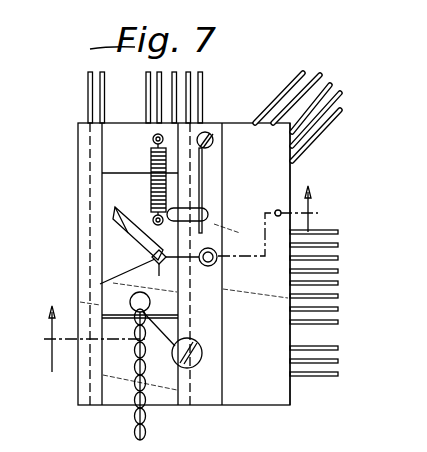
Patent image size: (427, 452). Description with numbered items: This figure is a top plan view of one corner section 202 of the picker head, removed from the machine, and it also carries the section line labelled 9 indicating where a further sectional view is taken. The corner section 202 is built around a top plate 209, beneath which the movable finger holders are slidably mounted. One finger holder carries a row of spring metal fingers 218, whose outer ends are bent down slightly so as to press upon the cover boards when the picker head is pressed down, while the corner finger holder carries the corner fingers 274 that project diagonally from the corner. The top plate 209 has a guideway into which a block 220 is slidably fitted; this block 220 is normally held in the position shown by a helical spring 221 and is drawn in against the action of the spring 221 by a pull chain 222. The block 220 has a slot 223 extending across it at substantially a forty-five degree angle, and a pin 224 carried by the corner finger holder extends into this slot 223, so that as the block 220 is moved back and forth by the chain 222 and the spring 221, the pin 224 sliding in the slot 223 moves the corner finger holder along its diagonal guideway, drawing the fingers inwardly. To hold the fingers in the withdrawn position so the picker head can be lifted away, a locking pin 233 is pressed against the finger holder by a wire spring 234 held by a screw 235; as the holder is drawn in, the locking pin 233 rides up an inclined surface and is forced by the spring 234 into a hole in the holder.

The corner section 202 is at (274, 182).
The top plate 209 is at (267, 392).
The spring metal fingers 218 is at (162, 93).
The block 220 is at (117, 258).
The helical spring 221 is at (157, 187).
The pull chain 222 is at (137, 425).
The slot 223 is at (130, 232).
The pin 224 is at (100, 284).
The locking pin 233 is at (208, 213).
The wire spring 234 is at (203, 177).
The screw 235 is at (213, 140).
The corner fingers 274 is at (331, 86).
The section line 9- 9 is at (181, 279).